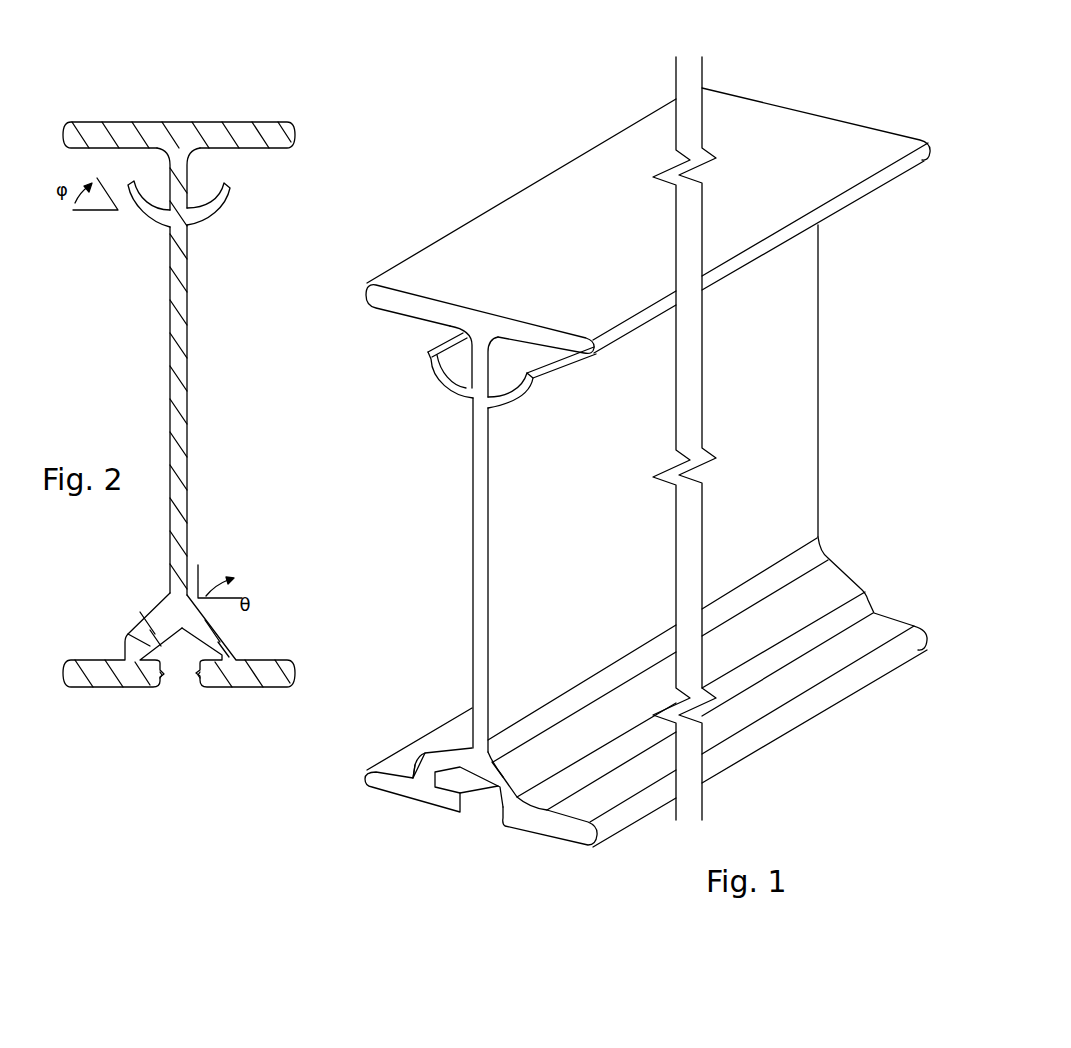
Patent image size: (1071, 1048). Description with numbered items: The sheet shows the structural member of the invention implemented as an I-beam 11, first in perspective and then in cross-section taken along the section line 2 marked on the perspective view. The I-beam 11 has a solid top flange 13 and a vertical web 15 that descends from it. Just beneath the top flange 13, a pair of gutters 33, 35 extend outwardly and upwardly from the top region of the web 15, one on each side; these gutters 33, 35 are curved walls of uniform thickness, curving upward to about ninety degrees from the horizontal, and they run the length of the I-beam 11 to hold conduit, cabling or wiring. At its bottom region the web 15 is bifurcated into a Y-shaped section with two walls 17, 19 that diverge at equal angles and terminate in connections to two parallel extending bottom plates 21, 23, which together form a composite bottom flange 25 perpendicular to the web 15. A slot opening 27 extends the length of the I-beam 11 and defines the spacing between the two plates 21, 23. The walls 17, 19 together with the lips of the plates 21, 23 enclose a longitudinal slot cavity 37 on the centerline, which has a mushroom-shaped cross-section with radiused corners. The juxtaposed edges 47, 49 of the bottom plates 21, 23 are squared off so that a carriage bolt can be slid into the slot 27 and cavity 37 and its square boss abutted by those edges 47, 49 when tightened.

In FIG. 2, the I-beam 11 is at (232, 428).
In FIG. 1, the I-beam 11 is at (855, 417).
In FIG. 2, the top flange 13 is at (240, 128).
In FIG. 1, the top flange 13 is at (779, 164).
In FIG. 2, the vertical web 15 is at (170, 393).
In FIG. 1, the vertical web 15 is at (592, 486).
In FIG. 2, the wall 17 is at (228, 648).
In FIG. 1, the wall 17 is at (507, 773).
In FIG. 2, the wall 19 is at (158, 618).
In FIG. 1, the wall 19 is at (443, 757).
In FIG. 2, the bottom plate 21 is at (262, 690).
In FIG. 1, the bottom plate 21 is at (565, 832).
In FIG. 2, the bottom plate 23 is at (95, 688).
In FIG. 1, the bottom plate 23 is at (376, 785).
In FIG. 2, the bottom flange 25 is at (178, 683).
In FIG. 1, the bottom flange 25 is at (463, 861).
In FIG. 1, the slot opening 27 is at (483, 817).
In FIG. 2, the gutter 33 is at (218, 214).
In FIG. 1, the gutter 33 is at (542, 377).
In FIG. 2, the gutter 35 is at (141, 216).
In FIG. 1, the gutter 35 is at (450, 365).
In FIG. 2, the slot cavity 37 is at (152, 643).
In FIG. 2, the edge 47 is at (200, 678).
In FIG. 2, the edge 49 is at (162, 678).
In FIG. 1, the cross-sectional view 2 is at (783, 337).